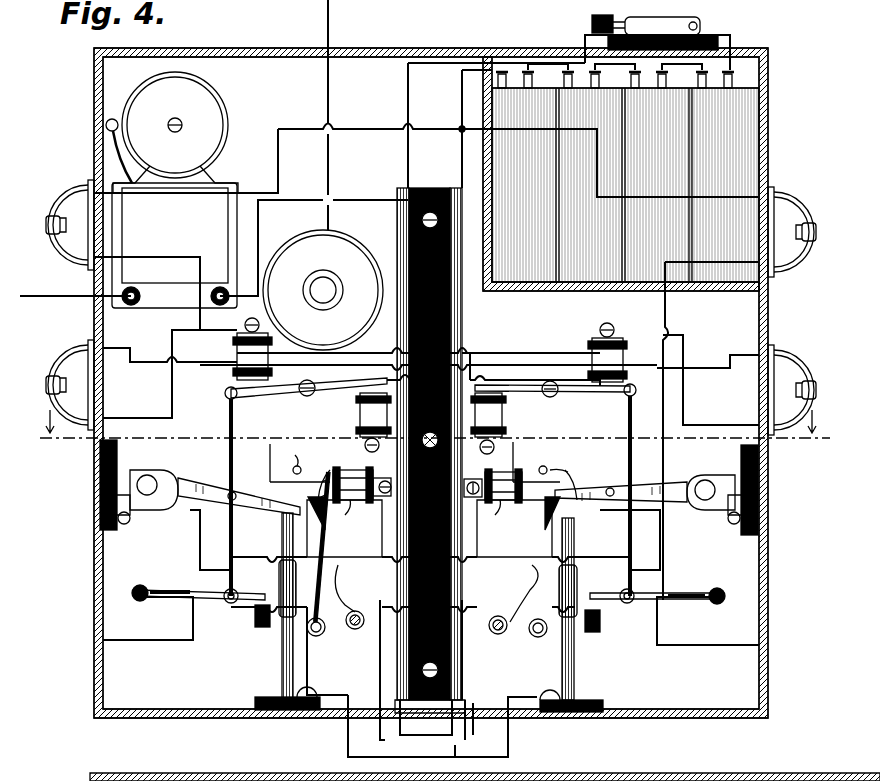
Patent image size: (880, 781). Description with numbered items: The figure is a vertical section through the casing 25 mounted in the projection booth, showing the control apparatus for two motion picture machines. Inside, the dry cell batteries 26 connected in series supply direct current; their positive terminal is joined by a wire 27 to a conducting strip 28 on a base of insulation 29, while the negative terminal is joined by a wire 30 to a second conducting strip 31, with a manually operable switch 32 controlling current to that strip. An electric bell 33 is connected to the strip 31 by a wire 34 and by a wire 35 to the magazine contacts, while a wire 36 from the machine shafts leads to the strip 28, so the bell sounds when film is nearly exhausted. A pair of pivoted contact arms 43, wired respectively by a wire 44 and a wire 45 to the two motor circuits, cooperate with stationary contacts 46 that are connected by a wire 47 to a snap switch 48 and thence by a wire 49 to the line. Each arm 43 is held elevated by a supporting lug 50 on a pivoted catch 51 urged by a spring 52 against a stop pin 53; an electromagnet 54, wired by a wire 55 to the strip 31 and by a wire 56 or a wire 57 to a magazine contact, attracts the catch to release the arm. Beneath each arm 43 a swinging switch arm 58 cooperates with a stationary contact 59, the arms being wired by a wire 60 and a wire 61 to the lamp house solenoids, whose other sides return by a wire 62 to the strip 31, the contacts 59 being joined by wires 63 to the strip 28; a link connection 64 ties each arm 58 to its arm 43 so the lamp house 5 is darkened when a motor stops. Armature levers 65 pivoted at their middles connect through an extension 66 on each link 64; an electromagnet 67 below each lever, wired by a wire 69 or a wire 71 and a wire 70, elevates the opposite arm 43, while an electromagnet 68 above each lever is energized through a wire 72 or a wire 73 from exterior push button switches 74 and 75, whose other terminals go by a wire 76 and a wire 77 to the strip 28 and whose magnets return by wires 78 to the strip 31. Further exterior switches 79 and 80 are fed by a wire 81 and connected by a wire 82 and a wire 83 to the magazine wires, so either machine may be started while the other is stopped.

The lamp house 5 is at (435, 436).
The casing 25 is at (96, 690).
The dry cell batteries 26 is at (759, 150).
The wire 27 is at (462, 66).
The conducting strip 28 is at (462, 332).
The base of insulation 29 is at (430, 188).
The wire 30 is at (408, 96).
The conducting strip 31 is at (397, 193).
The manually operable switch 32 is at (700, 24).
The electric bell 33 is at (220, 100).
The wire 34 is at (262, 238).
The wire 35 is at (50, 300).
The wire 36 is at (468, 759).
The contact arms 43 is at (258, 498).
The wire 44 is at (70, 560).
The wire 45 is at (810, 565).
The stationary contacts 46 is at (282, 666).
The wire 47 is at (536, 742).
The snap switch 48 is at (348, 246).
The wire 49 is at (328, 92).
The supporting lugs 50 is at (584, 514).
The pivoted catches 51 is at (318, 548).
The springs 52 is at (330, 596).
The stop pins 53 is at (428, 462).
The electromagnet 54 is at (429, 528).
The wire 55 is at (380, 470).
The wire 56 is at (380, 570).
The wire 57 is at (478, 552).
The swinging switch arm 58 is at (208, 602).
The stationary contact 59 is at (255, 608).
The wire 60 is at (125, 645).
The wire 61 is at (690, 648).
The wire 62 is at (400, 742).
The wires 63 is at (427, 608).
The link connection 64 is at (232, 556).
The armature levers 65 is at (280, 402).
The extension 66 is at (230, 418).
The electromagnet 67 is at (358, 426).
The electromagnet 68 is at (237, 354).
The wire 69 is at (382, 680).
The wire 70 is at (362, 416).
The wire 71 is at (465, 672).
The wire 72 is at (140, 418).
The wire 73 is at (683, 410).
The switch 74 is at (68, 364).
The switch 75 is at (782, 358).
The wire 76 is at (140, 360).
The wire 77 is at (710, 367).
The wires 78 is at (378, 353).
The switch 79 is at (76, 196).
The switch 80 is at (790, 198).
The wire 81 is at (433, 129).
The wire 82 is at (160, 256).
The wire 83 is at (665, 310).